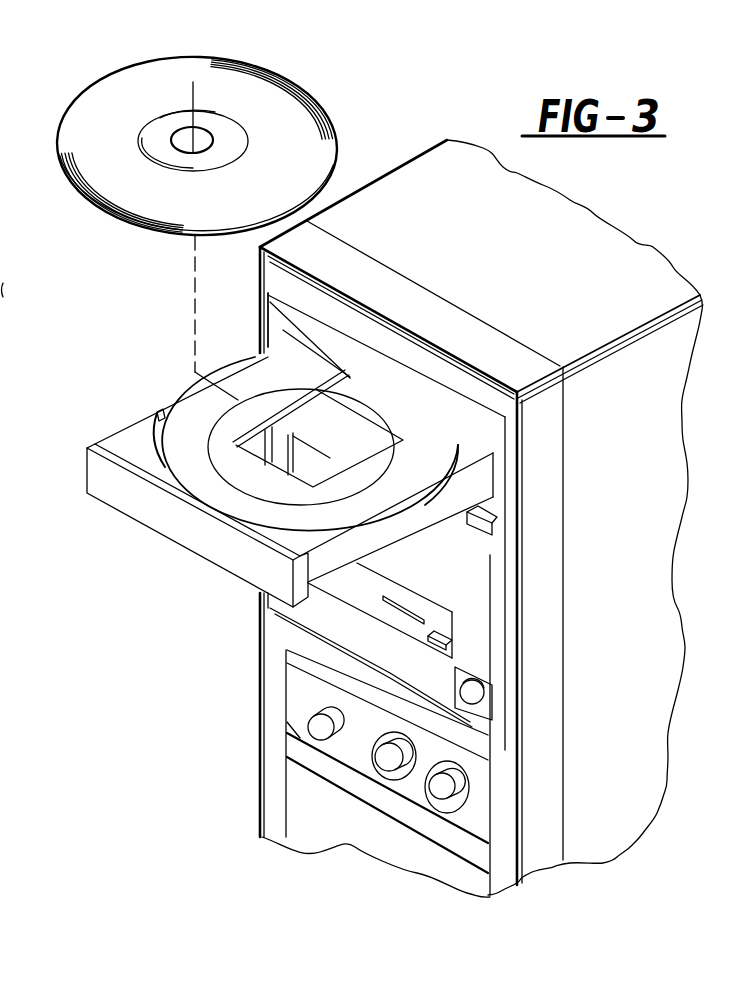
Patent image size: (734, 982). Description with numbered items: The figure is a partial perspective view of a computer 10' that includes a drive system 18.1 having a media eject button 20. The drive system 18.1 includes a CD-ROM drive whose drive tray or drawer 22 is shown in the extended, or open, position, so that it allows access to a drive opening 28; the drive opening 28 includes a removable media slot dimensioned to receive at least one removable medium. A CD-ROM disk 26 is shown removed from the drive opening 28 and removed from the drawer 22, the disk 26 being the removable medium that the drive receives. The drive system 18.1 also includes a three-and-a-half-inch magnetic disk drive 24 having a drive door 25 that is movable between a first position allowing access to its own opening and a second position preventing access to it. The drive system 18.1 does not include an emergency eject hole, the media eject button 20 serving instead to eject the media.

The computer 10' is at (486, 518).
The drive system 18.1 is at (507, 440).
The media eject button 20 is at (490, 527).
The drive tray or drawer 22 is at (150, 508).
The 3.5-inch magnetic disk drive 24 is at (440, 617).
The drive door 25 is at (367, 583).
The CD-ROM disk 26 is at (307, 125).
The drive opening 28 is at (267, 342).